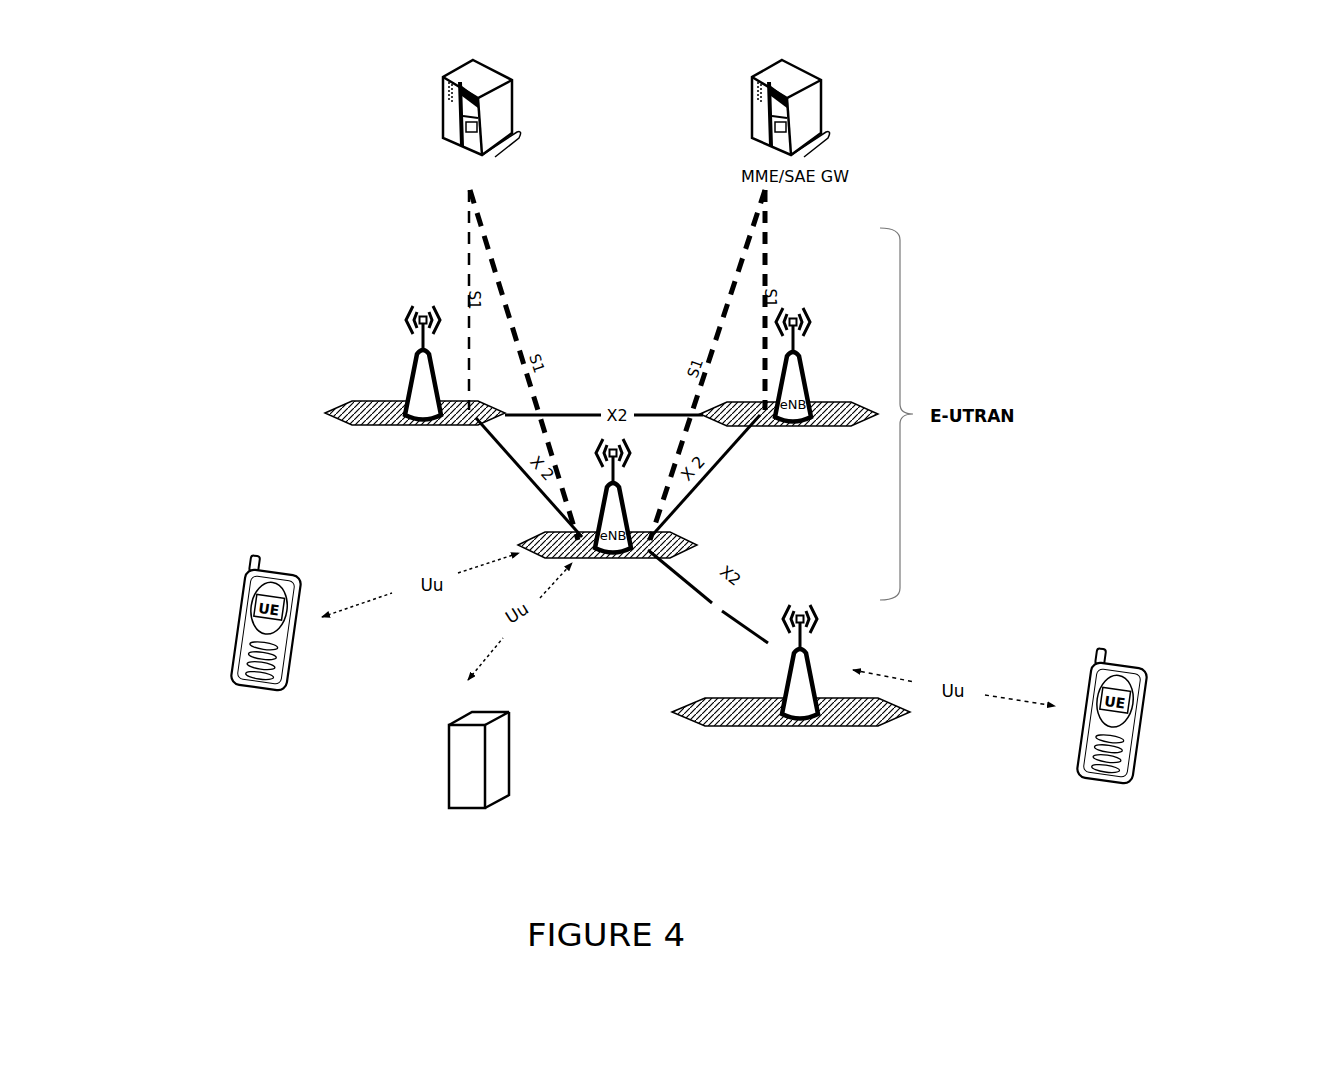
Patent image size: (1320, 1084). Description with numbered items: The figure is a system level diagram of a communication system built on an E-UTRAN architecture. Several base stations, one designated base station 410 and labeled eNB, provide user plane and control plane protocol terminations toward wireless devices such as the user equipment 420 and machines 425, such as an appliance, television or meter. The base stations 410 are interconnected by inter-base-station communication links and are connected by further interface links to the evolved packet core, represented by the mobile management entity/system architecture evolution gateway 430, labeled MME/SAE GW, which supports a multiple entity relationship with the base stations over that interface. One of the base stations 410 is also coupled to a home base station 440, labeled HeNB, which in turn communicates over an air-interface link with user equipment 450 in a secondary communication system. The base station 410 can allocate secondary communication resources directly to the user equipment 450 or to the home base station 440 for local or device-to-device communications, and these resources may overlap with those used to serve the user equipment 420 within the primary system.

The base station 410 is at (387, 362).
The user equipment 420 is at (225, 640).
The machine 425 is at (446, 752).
The mobile management entity/system architecture evolution gateway 430 is at (435, 101).
The home base station 440 is at (765, 657).
The user equipment 450 is at (1177, 723).